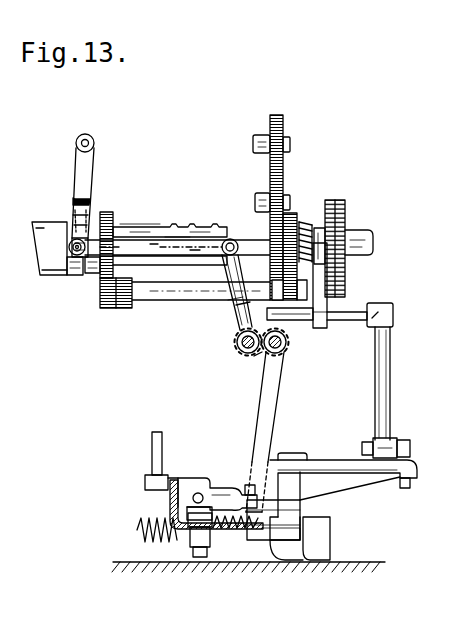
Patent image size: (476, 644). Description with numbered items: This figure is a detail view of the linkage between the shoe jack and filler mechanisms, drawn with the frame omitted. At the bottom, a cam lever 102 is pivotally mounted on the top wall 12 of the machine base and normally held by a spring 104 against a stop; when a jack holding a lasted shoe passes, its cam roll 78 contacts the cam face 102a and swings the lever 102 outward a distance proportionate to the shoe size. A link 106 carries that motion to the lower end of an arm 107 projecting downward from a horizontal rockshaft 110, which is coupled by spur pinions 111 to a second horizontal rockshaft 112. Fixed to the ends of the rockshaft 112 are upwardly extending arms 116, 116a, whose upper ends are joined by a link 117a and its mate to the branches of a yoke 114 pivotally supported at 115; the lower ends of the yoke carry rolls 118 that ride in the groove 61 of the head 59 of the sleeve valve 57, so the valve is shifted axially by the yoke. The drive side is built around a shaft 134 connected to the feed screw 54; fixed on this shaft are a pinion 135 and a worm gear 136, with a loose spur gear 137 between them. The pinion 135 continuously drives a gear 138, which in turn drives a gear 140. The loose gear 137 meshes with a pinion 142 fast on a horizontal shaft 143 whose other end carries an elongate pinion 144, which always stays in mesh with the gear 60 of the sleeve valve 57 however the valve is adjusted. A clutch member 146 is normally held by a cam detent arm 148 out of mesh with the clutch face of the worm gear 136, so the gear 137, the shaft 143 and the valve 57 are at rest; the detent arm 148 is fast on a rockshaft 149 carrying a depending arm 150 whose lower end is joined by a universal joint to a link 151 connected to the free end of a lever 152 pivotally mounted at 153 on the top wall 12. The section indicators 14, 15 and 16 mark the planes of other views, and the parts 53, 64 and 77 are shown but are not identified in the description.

The top wall 12 is at (223, 566).
The section line 14 is at (59, 193).
The section line 15 is at (22, 355).
The section line 16 is at (307, 138).
The shaft 53 is at (120, 224).
The feed screw 54 is at (190, 228).
The sleeve valve 57 is at (67, 278).
The head 59 is at (90, 220).
The gear 60 is at (108, 212).
The groove 61 is at (77, 278).
The support bracket 64 is at (38, 223).
The pin 77 is at (151, 446).
The cam roll 78 is at (145, 479).
The cam lever 102 is at (155, 493).
The cam face 102a is at (176, 478).
The spring 104 is at (158, 538).
The link 106 is at (217, 487).
The arm 107 is at (273, 389).
The rockshaft 110 is at (290, 352).
The spur pinions 111 is at (250, 361).
The second rockshaft 112 is at (235, 339).
The yoke 114 is at (96, 156).
The pivot 115 is at (89, 135).
The arm 116 is at (225, 323).
The arm 116a is at (238, 315).
The link 117a is at (180, 237).
The rolls 118 is at (169, 247).
The shaft 134 is at (247, 238).
The pinion 135 is at (268, 227).
The worm gear 136 is at (340, 207).
The spur gear 137 is at (297, 218).
The gear 138 is at (290, 188).
The gear 140 is at (285, 127).
The pinion 142 is at (333, 277).
The shaft 143 is at (160, 288).
The elongate pinion 144 is at (107, 311).
The clutch member 146 is at (322, 222).
The cam detent arm 148 is at (340, 300).
The rockshaft 149 is at (367, 300).
The depending arm 150 is at (388, 389).
The link 151 is at (412, 448).
The lever 152 is at (360, 470).
The pivot 153 is at (295, 447).